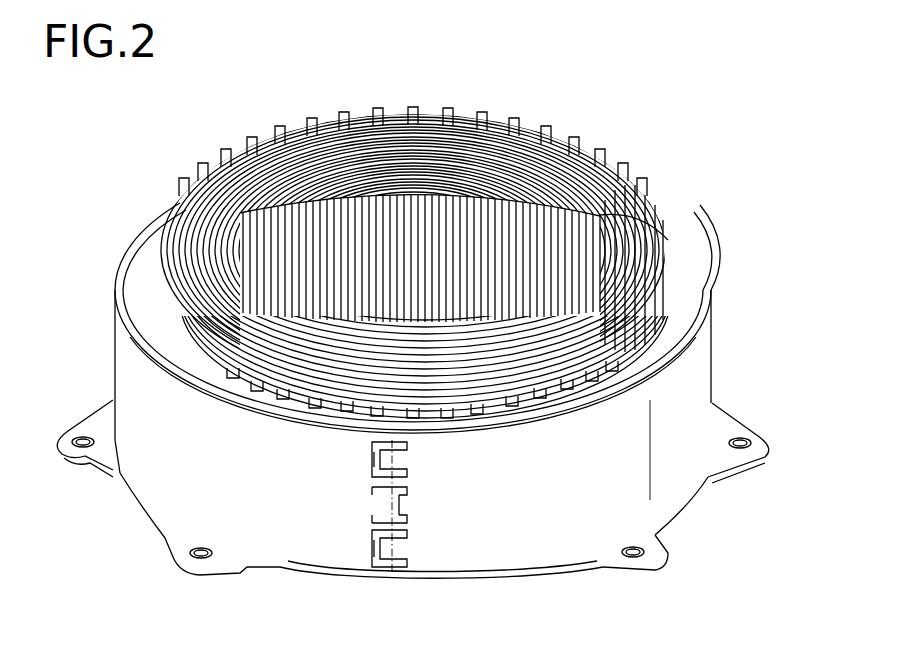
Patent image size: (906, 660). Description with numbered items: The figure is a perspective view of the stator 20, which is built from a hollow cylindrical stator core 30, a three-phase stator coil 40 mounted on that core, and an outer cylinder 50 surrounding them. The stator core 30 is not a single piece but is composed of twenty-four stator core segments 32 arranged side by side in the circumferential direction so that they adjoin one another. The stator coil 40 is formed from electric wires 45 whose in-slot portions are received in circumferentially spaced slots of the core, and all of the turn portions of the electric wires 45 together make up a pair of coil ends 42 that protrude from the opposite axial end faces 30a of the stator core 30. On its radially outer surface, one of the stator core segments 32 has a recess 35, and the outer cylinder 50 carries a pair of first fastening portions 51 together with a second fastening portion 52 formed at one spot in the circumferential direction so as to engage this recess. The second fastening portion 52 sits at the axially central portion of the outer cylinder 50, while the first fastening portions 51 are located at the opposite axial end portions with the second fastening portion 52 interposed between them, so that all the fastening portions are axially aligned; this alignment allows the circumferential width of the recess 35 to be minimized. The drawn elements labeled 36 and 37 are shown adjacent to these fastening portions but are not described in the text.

The stator 20 is at (651, 121).
The stator core 30 is at (699, 285).
The axial end face of the stator core 30a is at (683, 247).
The stator core segment 32 is at (683, 326).
The recess 35 is at (390, 572).
The terminal bracket 36 is at (404, 462).
The terminal bracket 37 is at (397, 495).
The stator coil 40 is at (196, 157).
The coil end 42 is at (287, 140).
The electric wire 45 is at (517, 393).
The outer cylinder 50 is at (716, 360).
The first fastening portion 51 is at (379, 456).
The second fastening portion 52 is at (405, 498).